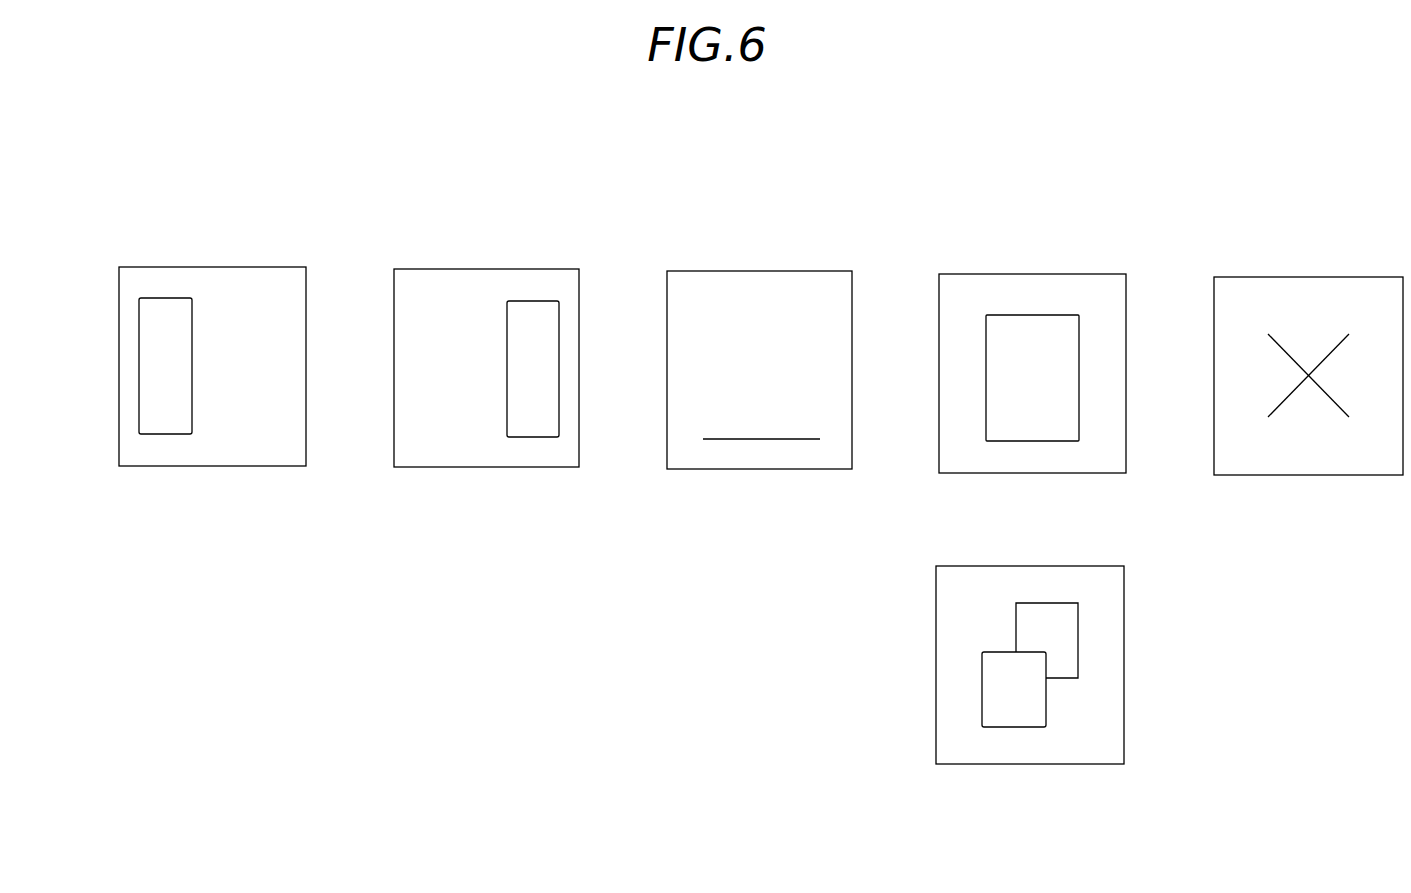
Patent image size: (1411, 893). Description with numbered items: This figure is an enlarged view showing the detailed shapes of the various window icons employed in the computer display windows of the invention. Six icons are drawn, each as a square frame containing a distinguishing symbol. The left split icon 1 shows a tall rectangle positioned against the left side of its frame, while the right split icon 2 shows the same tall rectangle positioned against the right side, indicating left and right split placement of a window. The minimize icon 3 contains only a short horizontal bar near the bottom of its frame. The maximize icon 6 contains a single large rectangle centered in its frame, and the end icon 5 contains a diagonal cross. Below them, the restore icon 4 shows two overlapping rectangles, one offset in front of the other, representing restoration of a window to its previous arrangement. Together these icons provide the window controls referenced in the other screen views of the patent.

The left split icon 1 is at (212, 325).
The right split icon 2 is at (486, 328).
The minimize icon 3 is at (759, 332).
The restore icon 4 is at (1030, 706).
The end icon 5 is at (1308, 336).
The maximize icon 6 is at (1032, 334).